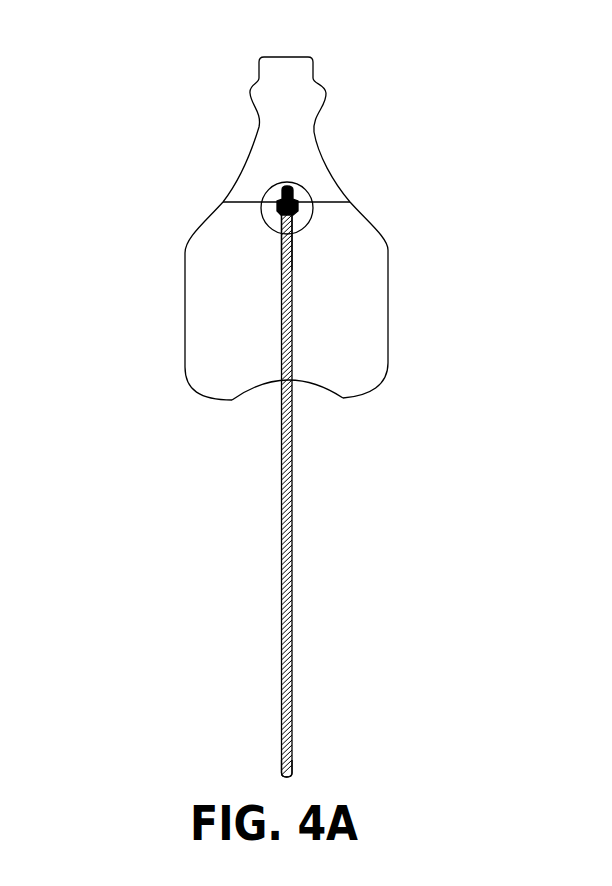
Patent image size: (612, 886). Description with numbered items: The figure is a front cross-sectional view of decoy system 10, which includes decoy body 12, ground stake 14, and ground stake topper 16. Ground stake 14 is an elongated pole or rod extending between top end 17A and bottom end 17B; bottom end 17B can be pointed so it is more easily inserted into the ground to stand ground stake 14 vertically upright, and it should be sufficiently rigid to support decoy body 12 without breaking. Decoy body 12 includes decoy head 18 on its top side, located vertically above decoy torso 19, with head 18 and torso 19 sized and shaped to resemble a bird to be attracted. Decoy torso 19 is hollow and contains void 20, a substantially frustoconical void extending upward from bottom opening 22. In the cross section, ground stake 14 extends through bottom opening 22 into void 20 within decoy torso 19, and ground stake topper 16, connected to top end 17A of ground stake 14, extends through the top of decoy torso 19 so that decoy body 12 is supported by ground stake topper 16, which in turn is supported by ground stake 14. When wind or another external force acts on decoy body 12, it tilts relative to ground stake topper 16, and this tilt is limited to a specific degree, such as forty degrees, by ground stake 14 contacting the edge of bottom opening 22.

The decoy system 10 is at (150, 130).
The decoy body 12 is at (253, 88).
The ground stake 14 is at (282, 548).
The ground stake topper 16 is at (285, 192).
The top end 17A is at (291, 264).
The bottom end 17B is at (292, 773).
The decoy head 18 is at (320, 90).
The decoy torso 19 is at (185, 278).
The void 20 is at (232, 302).
The bottom opening 22 is at (233, 402).